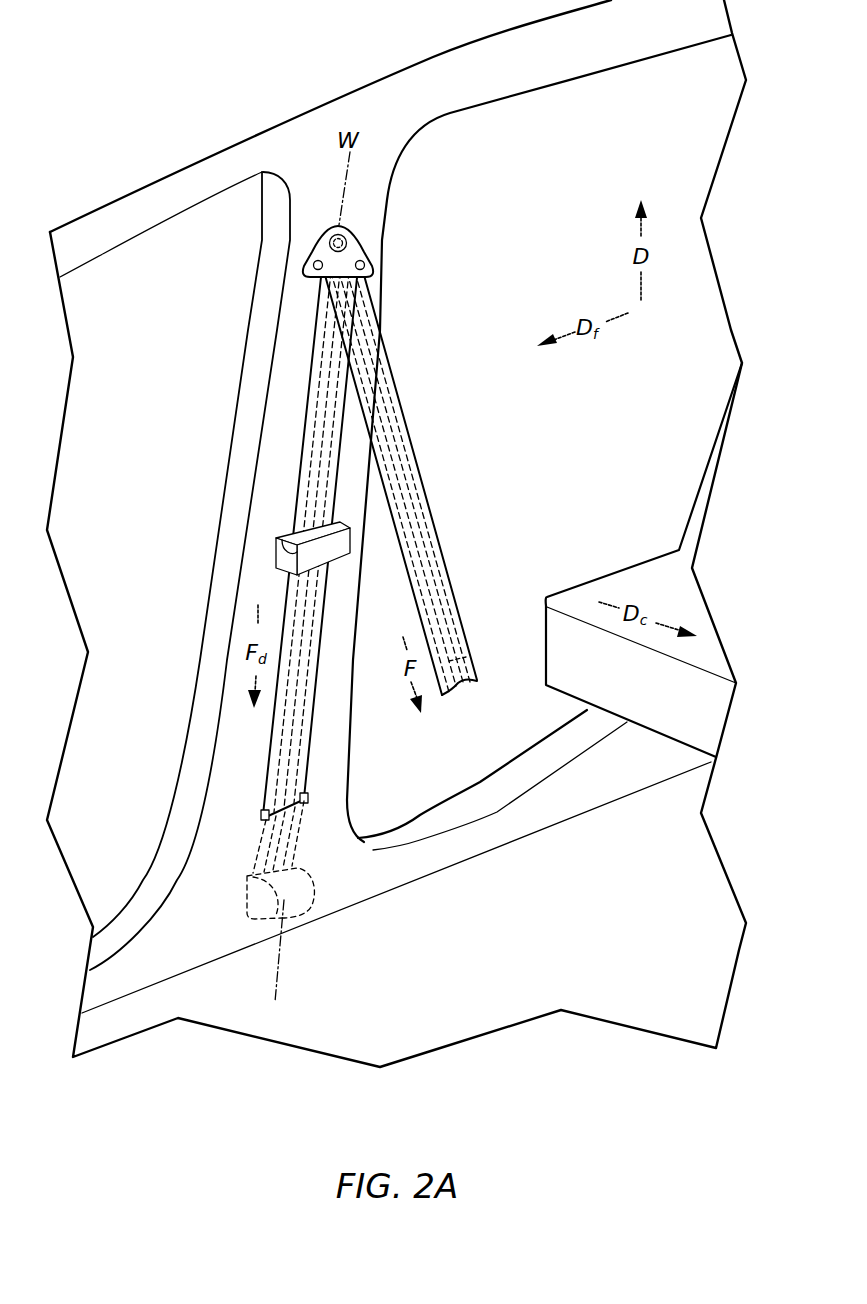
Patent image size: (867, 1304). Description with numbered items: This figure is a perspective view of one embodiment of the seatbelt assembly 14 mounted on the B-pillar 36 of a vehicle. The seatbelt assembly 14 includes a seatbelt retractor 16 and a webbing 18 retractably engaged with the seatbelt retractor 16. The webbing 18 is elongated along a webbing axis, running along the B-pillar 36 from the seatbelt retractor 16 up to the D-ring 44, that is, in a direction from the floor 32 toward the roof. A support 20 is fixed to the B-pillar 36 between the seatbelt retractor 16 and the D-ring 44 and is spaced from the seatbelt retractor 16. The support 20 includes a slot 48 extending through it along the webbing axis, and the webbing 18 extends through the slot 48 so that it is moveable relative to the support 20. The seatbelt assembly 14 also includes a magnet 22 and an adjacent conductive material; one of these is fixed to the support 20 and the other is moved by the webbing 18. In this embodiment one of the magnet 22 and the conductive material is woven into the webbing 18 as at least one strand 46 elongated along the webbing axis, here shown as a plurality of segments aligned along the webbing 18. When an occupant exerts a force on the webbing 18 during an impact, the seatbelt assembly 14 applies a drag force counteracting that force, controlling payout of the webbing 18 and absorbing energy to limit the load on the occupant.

The seatbelt assembly 14 is at (400, 302).
The seatbelt retractor 16 is at (296, 912).
The webbing 18 is at (393, 570).
The support 20 is at (249, 556).
The magnet 22 is at (413, 518).
The floor 32 is at (447, 871).
The B-pillar 36 is at (263, 272).
The D-ring 44 is at (335, 228).
The strand 46 is at (477, 663).
The slot 48 is at (277, 553).